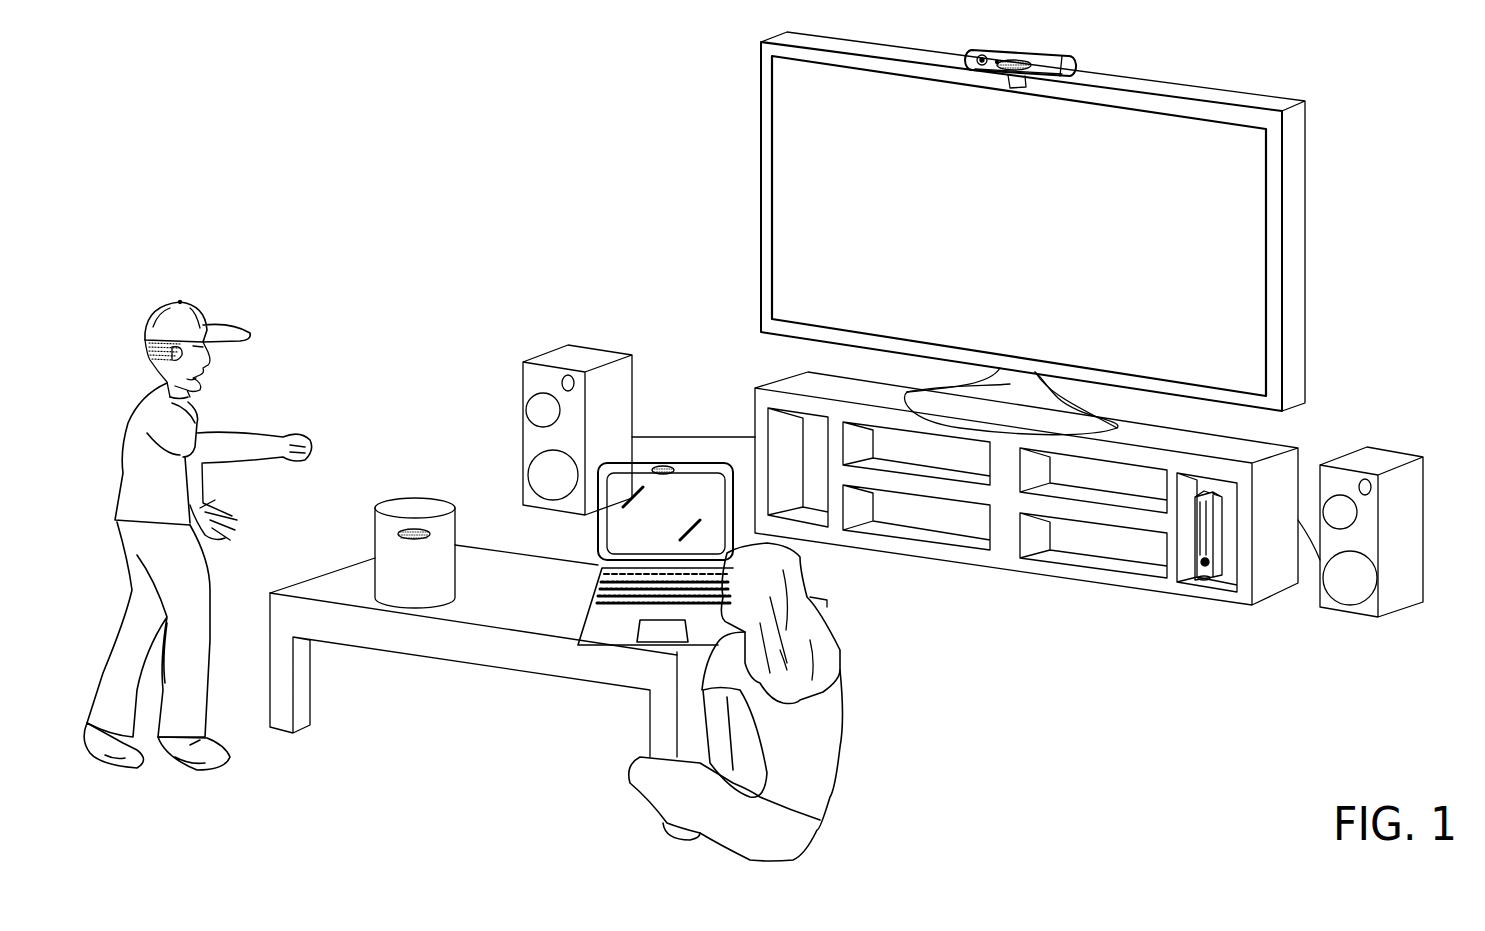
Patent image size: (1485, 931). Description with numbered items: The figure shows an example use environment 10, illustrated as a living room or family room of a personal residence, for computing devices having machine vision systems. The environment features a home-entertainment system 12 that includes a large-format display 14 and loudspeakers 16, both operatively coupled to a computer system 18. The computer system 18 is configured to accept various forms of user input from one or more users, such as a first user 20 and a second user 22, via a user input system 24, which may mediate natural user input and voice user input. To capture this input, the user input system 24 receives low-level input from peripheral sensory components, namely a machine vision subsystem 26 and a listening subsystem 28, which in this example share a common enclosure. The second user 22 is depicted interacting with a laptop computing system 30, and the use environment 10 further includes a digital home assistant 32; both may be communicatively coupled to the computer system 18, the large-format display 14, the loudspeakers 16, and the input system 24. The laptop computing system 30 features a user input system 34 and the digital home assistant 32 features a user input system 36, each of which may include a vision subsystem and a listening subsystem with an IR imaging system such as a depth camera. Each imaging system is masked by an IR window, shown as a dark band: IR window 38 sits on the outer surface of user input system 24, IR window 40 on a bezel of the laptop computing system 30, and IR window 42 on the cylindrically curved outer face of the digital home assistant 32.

The use environment 10 is at (256, 118).
The home-entertainment system 12 is at (1224, 52).
The large-format display 14 is at (1252, 373).
The loudspeakers 16 is at (1416, 590).
The computer system 18 is at (1213, 609).
The first user 20 is at (176, 281).
The second user 22 is at (846, 628).
The user input system 24 is at (1010, 48).
The machine vision subsystem 26 is at (981, 38).
The listening subsystem 28 is at (1078, 50).
The laptop computing system 30 is at (622, 644).
The digital home assistant 32 is at (424, 601).
The user input system 34 is at (668, 455).
The user input system 36 is at (414, 510).
The IR window 38 is at (1009, 73).
The IR window 40 is at (664, 477).
The IR window 42 is at (410, 541).